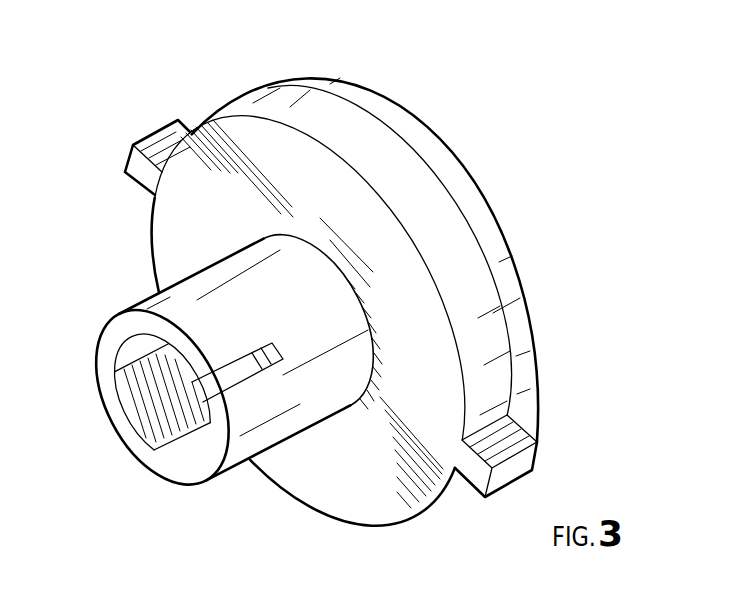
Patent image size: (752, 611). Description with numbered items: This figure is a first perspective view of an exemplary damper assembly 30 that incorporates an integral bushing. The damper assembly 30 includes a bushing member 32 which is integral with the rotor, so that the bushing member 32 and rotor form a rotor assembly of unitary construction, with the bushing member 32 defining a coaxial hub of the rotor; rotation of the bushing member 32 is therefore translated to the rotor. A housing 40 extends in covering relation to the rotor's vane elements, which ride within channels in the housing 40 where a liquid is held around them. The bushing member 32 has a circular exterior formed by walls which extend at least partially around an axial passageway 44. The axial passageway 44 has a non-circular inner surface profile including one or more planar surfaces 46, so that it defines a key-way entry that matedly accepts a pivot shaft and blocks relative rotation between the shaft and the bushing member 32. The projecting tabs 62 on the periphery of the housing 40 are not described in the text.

The damper assembly 30 is at (444, 109).
The bushing member 32 is at (130, 312).
The housing 40 is at (343, 488).
The axial passageway 44 is at (184, 452).
The planar surfaces 46 is at (143, 402).
The tab 62 is at (152, 137).